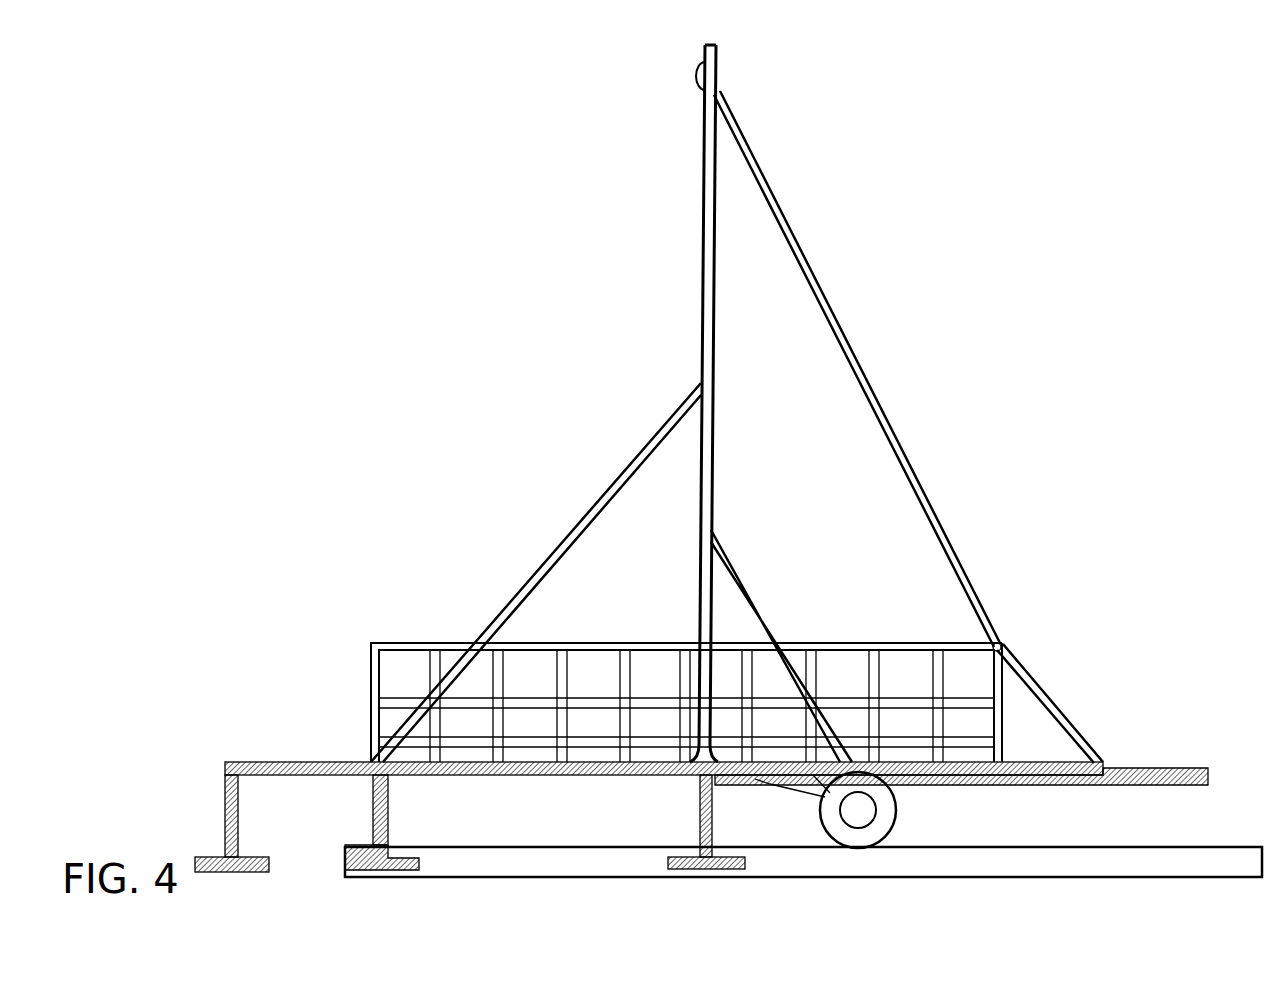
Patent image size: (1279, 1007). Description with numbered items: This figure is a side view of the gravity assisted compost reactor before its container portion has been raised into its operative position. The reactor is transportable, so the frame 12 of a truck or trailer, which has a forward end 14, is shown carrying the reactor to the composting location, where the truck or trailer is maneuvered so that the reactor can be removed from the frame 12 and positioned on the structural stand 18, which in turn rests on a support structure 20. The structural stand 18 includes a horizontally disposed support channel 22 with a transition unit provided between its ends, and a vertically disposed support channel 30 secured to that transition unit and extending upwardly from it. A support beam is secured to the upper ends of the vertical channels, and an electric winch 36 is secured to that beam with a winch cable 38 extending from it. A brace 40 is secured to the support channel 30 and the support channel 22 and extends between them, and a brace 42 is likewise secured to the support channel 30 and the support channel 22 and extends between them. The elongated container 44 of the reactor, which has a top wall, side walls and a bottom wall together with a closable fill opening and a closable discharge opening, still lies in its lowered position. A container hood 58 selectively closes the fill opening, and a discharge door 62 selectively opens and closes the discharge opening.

The frame 12 is at (930, 810).
The forward end 14 is at (1218, 770).
The structural stand 18 is at (690, 403).
The support structure 20 is at (410, 821).
The horizontally disposed support channel 22 is at (298, 760).
The vertically disposed support channel 30 is at (714, 478).
The electric winch 36 is at (695, 77).
The winch cable 38 is at (882, 412).
The brace 40 is at (757, 600).
The brace 42 is at (598, 498).
The container 44 is at (633, 652).
The container hood 58 is at (1085, 705).
The discharge door 62 is at (350, 683).